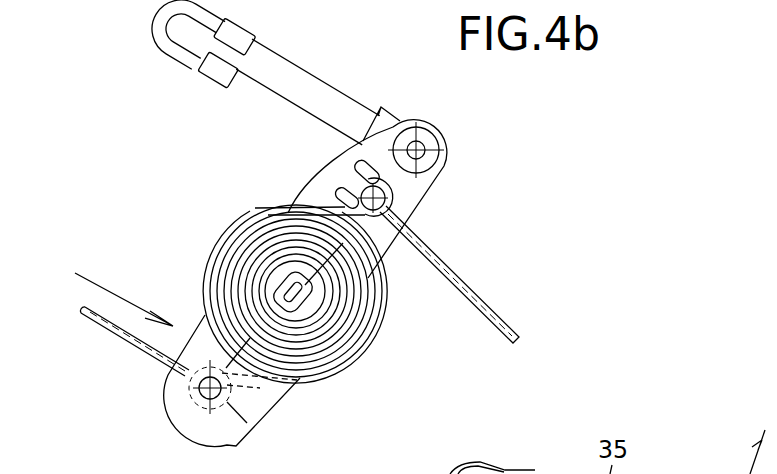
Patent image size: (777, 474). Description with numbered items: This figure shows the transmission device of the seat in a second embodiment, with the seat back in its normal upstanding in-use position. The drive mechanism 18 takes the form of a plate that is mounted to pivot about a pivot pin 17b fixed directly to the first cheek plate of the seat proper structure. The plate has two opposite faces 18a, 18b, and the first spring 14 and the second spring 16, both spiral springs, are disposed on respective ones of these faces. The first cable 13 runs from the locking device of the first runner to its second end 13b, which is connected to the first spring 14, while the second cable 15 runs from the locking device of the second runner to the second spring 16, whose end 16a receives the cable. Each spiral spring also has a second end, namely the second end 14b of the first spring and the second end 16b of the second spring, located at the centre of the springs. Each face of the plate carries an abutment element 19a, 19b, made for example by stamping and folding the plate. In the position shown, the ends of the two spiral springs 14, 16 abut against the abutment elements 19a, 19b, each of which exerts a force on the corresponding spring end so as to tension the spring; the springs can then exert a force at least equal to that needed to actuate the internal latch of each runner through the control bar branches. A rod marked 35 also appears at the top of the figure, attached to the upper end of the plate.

The rod with eye end 35 is at (277, 78).
The first cable 13 is at (487, 307).
The second end of the first cable 13b is at (385, 197).
The first spring 14 is at (250, 220).
The second end of the first spring 14b is at (280, 282).
The second cable 15 is at (120, 336).
The second spring 16 is at (340, 370).
The end of the second spring 16a is at (188, 397).
The second end of the second spring 16b is at (280, 294).
The pivot pin 17b is at (288, 309).
The drive mechanism 18 is at (117, 285).
The face of the plate 18a is at (313, 192).
The face of the plate 18b is at (277, 410).
The abutment element 19a is at (317, 193).
The abutment element 19b is at (225, 400).